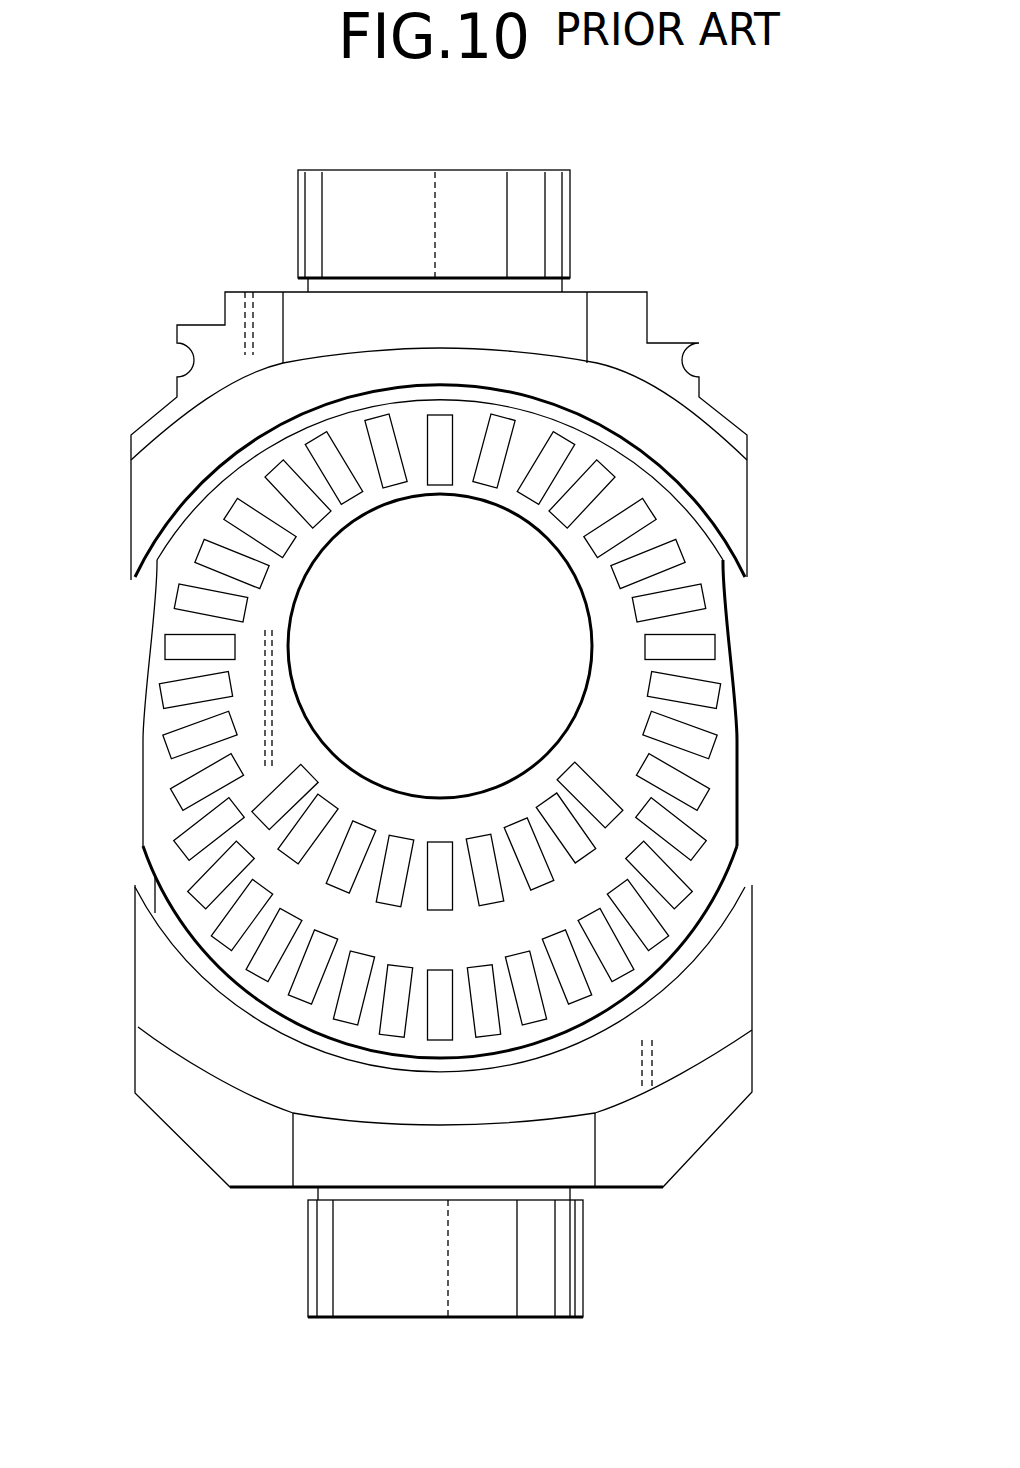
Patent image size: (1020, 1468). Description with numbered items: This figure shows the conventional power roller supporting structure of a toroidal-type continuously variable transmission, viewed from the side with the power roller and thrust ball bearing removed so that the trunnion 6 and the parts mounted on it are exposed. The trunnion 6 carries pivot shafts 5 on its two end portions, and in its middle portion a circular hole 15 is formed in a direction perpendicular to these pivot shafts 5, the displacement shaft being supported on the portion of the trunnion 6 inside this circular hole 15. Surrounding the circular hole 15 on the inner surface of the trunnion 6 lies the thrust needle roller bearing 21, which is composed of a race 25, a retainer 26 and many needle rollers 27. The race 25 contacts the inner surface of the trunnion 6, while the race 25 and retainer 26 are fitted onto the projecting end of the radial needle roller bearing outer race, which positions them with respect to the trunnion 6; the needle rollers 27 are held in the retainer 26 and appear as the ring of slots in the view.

The pivot shaft 5 is at (556, 218).
The trunnion 6 is at (693, 1122).
The circular hole 15 is at (580, 603).
The thrust needle roller bearing 21 is at (655, 925).
The race 25 is at (170, 537).
The retainer 26 is at (560, 435).
The needle roller 27 is at (190, 790).